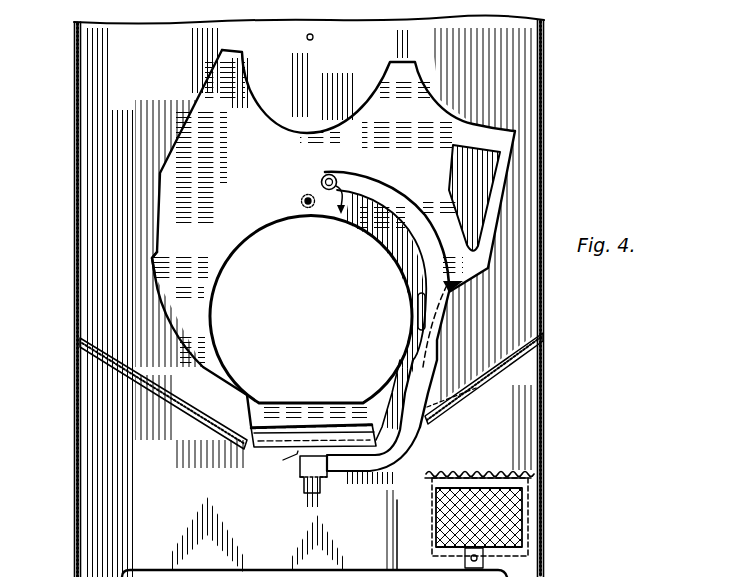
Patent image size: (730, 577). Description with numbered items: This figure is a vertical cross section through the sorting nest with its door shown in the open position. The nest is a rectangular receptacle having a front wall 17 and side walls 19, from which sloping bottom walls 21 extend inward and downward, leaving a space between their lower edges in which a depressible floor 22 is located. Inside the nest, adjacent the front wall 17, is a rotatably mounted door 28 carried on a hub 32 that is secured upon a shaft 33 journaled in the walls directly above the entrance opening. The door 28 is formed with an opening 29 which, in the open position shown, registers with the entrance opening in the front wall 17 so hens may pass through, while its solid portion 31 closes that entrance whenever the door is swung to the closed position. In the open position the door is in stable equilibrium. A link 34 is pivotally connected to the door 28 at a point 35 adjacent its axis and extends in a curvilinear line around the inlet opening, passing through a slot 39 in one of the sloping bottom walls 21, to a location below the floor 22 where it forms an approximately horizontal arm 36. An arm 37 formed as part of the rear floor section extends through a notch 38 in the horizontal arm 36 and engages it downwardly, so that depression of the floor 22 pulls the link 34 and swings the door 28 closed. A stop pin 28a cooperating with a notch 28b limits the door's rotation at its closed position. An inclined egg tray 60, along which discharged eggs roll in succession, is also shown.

The front wall 17 is at (530, 63).
The side walls 19 is at (543, 173).
The sloping bottom walls 21 is at (178, 408).
The depressible floor 22 is at (283, 460).
The door 28 is at (189, 115).
The pin 28a is at (311, 40).
The notch 28b is at (156, 258).
The opening 29 is at (251, 242).
The solid portion 31 is at (300, 176).
The hub 32 is at (307, 208).
The shaft 33 is at (312, 206).
The link 34 is at (380, 193).
The pivot point 35 is at (335, 178).
The horizontal arm 36 is at (356, 468).
The arm 37 is at (300, 483).
The notch 38 is at (308, 430).
The slot 39 is at (426, 422).
The inclined egg tray 60 is at (520, 546).